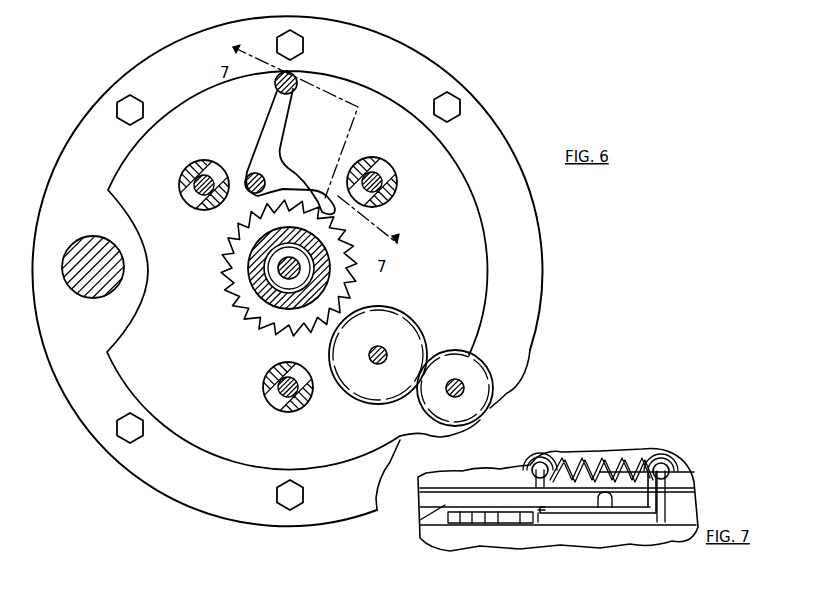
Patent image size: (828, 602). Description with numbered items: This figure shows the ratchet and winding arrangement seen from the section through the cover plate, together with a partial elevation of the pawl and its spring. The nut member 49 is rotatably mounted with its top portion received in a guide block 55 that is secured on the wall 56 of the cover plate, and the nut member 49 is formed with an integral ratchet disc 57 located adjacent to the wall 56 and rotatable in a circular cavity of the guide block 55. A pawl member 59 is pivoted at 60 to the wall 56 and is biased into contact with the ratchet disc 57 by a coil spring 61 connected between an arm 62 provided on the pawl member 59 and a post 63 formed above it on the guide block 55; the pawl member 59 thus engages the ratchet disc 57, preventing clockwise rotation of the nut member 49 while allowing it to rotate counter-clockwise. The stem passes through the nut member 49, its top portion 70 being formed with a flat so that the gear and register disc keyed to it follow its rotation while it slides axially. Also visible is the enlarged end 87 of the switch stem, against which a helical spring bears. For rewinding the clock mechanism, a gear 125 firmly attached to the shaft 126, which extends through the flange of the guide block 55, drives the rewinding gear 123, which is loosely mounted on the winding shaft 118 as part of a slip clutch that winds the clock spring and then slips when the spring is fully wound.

In FIG. 6, the nut member 49 is at (252, 272).
In FIG. 6, the guide block 55 is at (180, 183).
In FIG. 7, the guide block 55 is at (420, 520).
In FIG. 6, the wall 56 is at (333, 75).
In FIG. 7, the wall 56 is at (578, 540).
In FIG. 6, the ratchet disc 57 is at (244, 308).
In FIG. 7, the ratchet disc 57 is at (500, 524).
In FIG. 6, the pawl member 59 is at (286, 155).
In FIG. 7, the pawl member 59 is at (608, 518).
In FIG. 6, the pivot 60 is at (250, 175).
In FIG. 7, the coil spring 61 is at (587, 466).
In FIG. 6, the arm 62 is at (274, 89).
In FIG. 7, the arm 62 is at (662, 461).
In FIG. 7, the post 63 is at (537, 460).
In FIG. 6, the top portion of the stem 70 is at (272, 256).
In FIG. 6, the enlarged end 87 is at (101, 242).
In FIG. 6, the shaft 118 is at (455, 378).
In FIG. 6, the gear 123 is at (479, 356).
In FIG. 6, the gear 125 is at (381, 307).
In FIG. 6, the shaft 126 is at (375, 362).